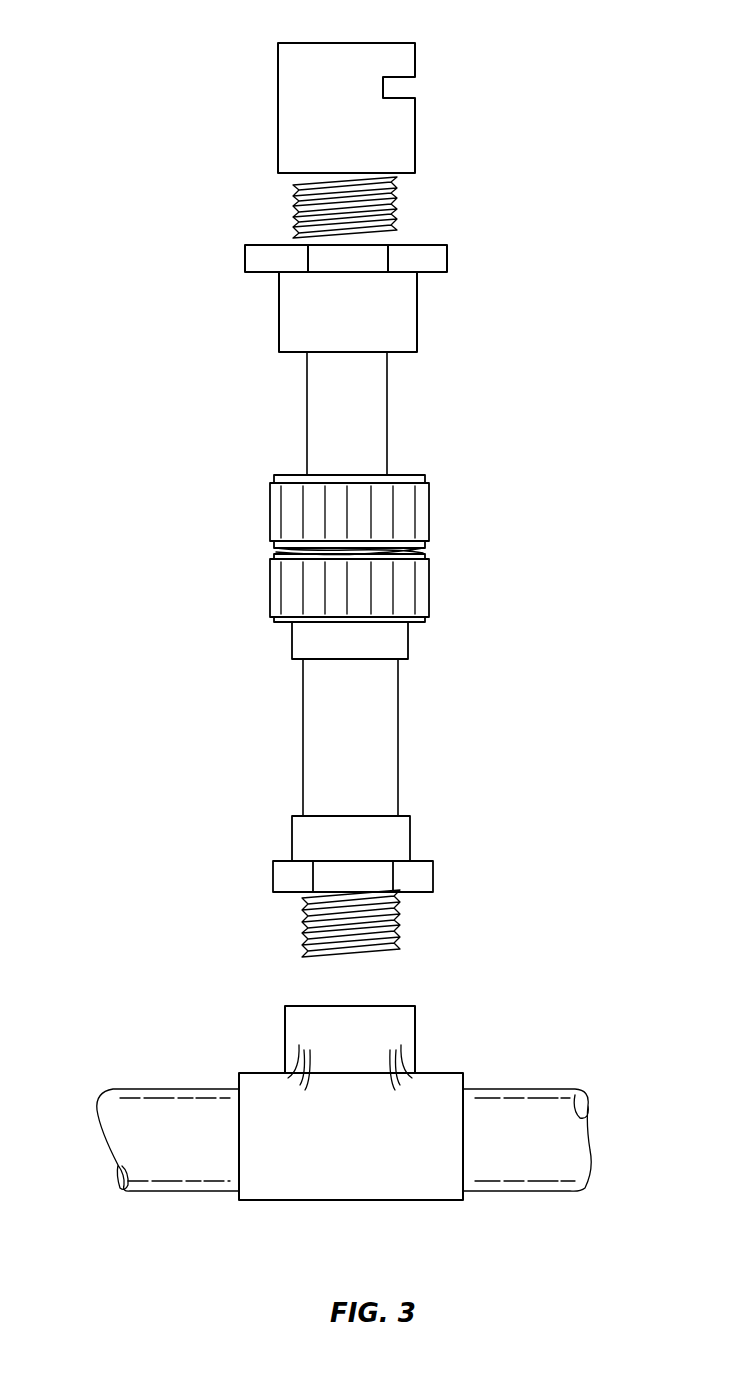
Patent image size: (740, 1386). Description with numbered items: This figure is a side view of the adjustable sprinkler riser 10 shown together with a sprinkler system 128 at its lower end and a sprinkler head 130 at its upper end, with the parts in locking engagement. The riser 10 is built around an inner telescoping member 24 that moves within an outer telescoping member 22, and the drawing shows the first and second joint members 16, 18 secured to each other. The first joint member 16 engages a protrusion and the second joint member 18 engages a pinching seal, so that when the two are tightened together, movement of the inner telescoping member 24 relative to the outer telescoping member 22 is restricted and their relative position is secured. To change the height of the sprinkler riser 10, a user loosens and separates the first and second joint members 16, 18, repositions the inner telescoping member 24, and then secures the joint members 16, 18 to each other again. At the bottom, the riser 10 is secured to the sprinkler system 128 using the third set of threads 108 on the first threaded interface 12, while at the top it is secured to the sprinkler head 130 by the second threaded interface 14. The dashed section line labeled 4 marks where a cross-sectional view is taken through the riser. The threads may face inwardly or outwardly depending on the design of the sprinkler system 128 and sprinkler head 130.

The adjustable sprinkler riser 10 is at (188, 198).
The sprinkler head 130 is at (305, 62).
The second threaded interface 14 is at (428, 256).
The inner telescoping member 24 is at (322, 405).
The section line 4- 4 is at (323, 431).
The second joint member 18 is at (293, 508).
The first joint member 16 is at (420, 601).
The outer telescoping member 22 is at (327, 750).
The first threaded interface 12 is at (290, 876).
The third set of threads 108 is at (383, 923).
The sprinkler system 128 is at (420, 1082).